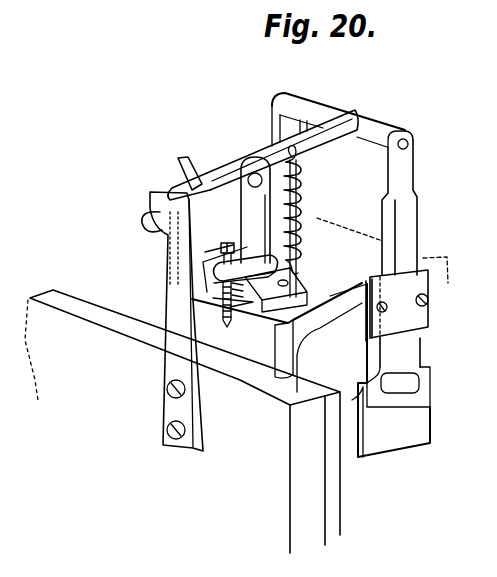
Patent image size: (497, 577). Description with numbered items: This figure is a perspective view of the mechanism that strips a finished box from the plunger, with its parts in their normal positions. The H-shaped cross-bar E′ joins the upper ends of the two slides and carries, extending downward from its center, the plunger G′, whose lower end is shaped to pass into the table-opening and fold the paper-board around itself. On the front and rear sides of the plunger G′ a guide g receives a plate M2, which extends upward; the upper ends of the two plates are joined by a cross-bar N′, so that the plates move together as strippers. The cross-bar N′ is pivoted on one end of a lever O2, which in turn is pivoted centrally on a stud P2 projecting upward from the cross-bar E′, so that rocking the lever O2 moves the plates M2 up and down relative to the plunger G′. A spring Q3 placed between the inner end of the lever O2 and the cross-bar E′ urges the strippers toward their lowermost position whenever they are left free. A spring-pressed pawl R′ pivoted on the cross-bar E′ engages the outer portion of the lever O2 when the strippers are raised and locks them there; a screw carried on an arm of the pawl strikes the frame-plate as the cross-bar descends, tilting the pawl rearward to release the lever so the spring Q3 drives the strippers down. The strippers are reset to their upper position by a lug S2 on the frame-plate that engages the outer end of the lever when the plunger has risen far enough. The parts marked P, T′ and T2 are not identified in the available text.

The cross-bar N′ is at (368, 127).
The stud P2 is at (235, 168).
The lever arm P is at (226, 173).
The lever O2 is at (267, 153).
The spring-pressed pawl R′ is at (182, 185).
The lug S2 is at (153, 227).
The clamp plate T′ is at (215, 246).
The screw T2 is at (227, 308).
The spring Q3 is at (300, 207).
The plate M2 is at (300, 170).
The guide g is at (418, 312).
The H-shaped cross-bar E′ is at (320, 298).
The plunger G′ is at (395, 440).